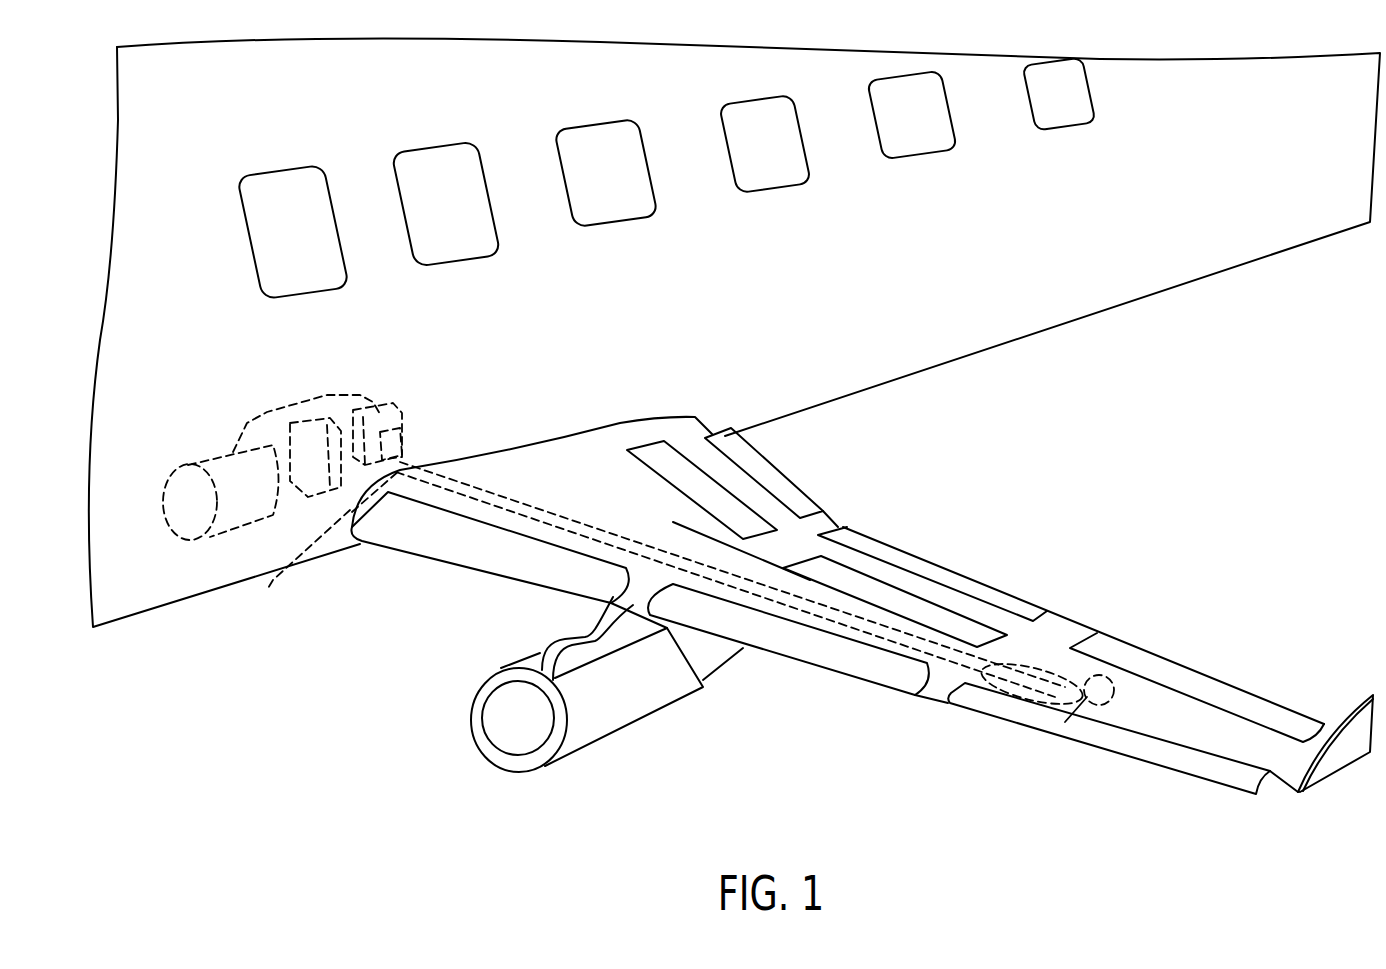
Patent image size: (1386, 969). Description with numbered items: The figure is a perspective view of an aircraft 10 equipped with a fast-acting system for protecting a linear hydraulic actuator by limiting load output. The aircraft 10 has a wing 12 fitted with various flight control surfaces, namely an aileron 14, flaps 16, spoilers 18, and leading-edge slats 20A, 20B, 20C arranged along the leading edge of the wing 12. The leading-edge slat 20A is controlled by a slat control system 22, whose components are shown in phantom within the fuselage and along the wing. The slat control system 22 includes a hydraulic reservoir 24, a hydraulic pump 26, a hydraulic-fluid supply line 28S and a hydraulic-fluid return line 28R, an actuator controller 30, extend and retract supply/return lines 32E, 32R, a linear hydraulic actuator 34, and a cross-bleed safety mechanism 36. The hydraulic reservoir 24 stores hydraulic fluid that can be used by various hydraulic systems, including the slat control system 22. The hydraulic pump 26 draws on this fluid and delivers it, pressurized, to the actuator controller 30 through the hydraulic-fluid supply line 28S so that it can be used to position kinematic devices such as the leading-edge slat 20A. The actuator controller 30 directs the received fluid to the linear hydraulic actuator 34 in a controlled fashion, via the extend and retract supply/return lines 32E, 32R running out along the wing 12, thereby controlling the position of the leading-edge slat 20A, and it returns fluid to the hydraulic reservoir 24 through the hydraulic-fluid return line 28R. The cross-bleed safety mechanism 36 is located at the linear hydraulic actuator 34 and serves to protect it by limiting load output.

The aircraft 10 is at (1032, 312).
The wing 12 is at (1218, 732).
The aileron 14 is at (1173, 658).
The flaps 16 is at (796, 483).
The spoilers 18 is at (693, 503).
The leading-edge slat 20A is at (1063, 742).
The leading-edge slat 20B is at (780, 663).
The leading-edge slat 20C is at (453, 565).
The slat control system 22 is at (438, 380).
The hydraulic reservoir 24 is at (176, 468).
The hydraulic pump 26 is at (316, 510).
The hydraulic-fluid return line 28R is at (301, 393).
The hydraulic-fluid supply line 28S is at (350, 463).
The actuator controller 30 is at (413, 424).
The retract supply/return line 32R is at (465, 480).
The extend supply/return line 32E is at (565, 508).
The linear hydraulic actuator 34 is at (1117, 700).
The cross-bleed safety mechanism 36 is at (1067, 677).